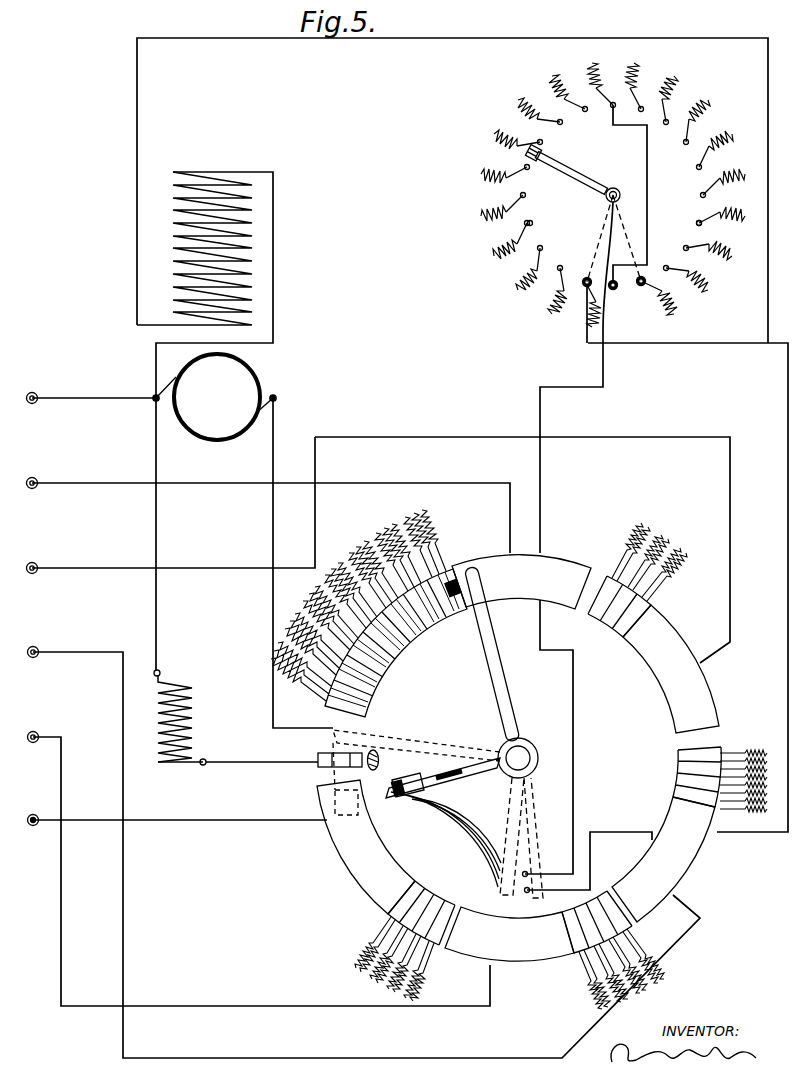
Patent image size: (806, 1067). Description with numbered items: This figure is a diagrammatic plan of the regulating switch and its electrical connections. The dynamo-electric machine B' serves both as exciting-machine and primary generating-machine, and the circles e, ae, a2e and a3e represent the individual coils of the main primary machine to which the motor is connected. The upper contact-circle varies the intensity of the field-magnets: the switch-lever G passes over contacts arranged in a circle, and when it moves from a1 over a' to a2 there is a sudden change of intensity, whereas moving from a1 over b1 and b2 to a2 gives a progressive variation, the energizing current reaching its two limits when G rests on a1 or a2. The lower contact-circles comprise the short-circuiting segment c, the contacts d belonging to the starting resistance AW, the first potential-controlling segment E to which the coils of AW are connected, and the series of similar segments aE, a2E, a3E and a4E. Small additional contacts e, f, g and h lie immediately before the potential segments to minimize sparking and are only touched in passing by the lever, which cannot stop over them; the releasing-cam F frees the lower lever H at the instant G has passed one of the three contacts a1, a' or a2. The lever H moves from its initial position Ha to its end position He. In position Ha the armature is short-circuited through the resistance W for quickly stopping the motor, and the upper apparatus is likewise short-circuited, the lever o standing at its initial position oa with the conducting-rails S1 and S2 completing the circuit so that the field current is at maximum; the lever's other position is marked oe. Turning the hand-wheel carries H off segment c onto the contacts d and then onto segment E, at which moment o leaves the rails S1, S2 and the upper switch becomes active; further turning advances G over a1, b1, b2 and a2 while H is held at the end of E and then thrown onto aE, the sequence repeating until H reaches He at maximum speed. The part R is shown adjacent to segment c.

The releasing-cam F is at (32, 421).
The individual coil of the main primary machine e is at (357, 558).
The individual coil of the main primary machine ae is at (33, 588).
The individual coil of the main primary machine a2e is at (34, 674).
The individual coil of the main primary machine a3e is at (34, 758).
The dynamo-electric machine B' is at (214, 397).
The resistance W is at (184, 717).
The switch-lever G is at (572, 173).
The contact b1 is at (538, 218).
The contact b2 is at (689, 217).
The contact a1 is at (590, 241).
The contact a2 is at (637, 240).
The contact a' is at (613, 294).
The switch-lever H is at (507, 684).
The first potential-controlling segment E is at (521, 582).
The potential-controlling segment aE is at (671, 669).
The potential-controlling segment a2E is at (663, 859).
The potential-controlling segment a3E is at (509, 934).
The potential-controlling segment a4E is at (366, 847).
The contacts of the starting resistance d is at (396, 643).
The starting resistance AW is at (358, 605).
The additional contact f is at (690, 796).
The additional contact g is at (588, 920).
The additional contact h is at (432, 915).
The conducting-rail S1 is at (456, 835).
The conducting-rail S2 is at (445, 839).
The initial position of lever O oa is at (513, 836).
The brush oe is at (535, 838).
The initial position of lever H Ha is at (416, 772).
The end position of lever H He is at (441, 778).
The lever o is at (407, 785).
The short-circuiting segment c is at (331, 756).
The roller contact R is at (379, 760).